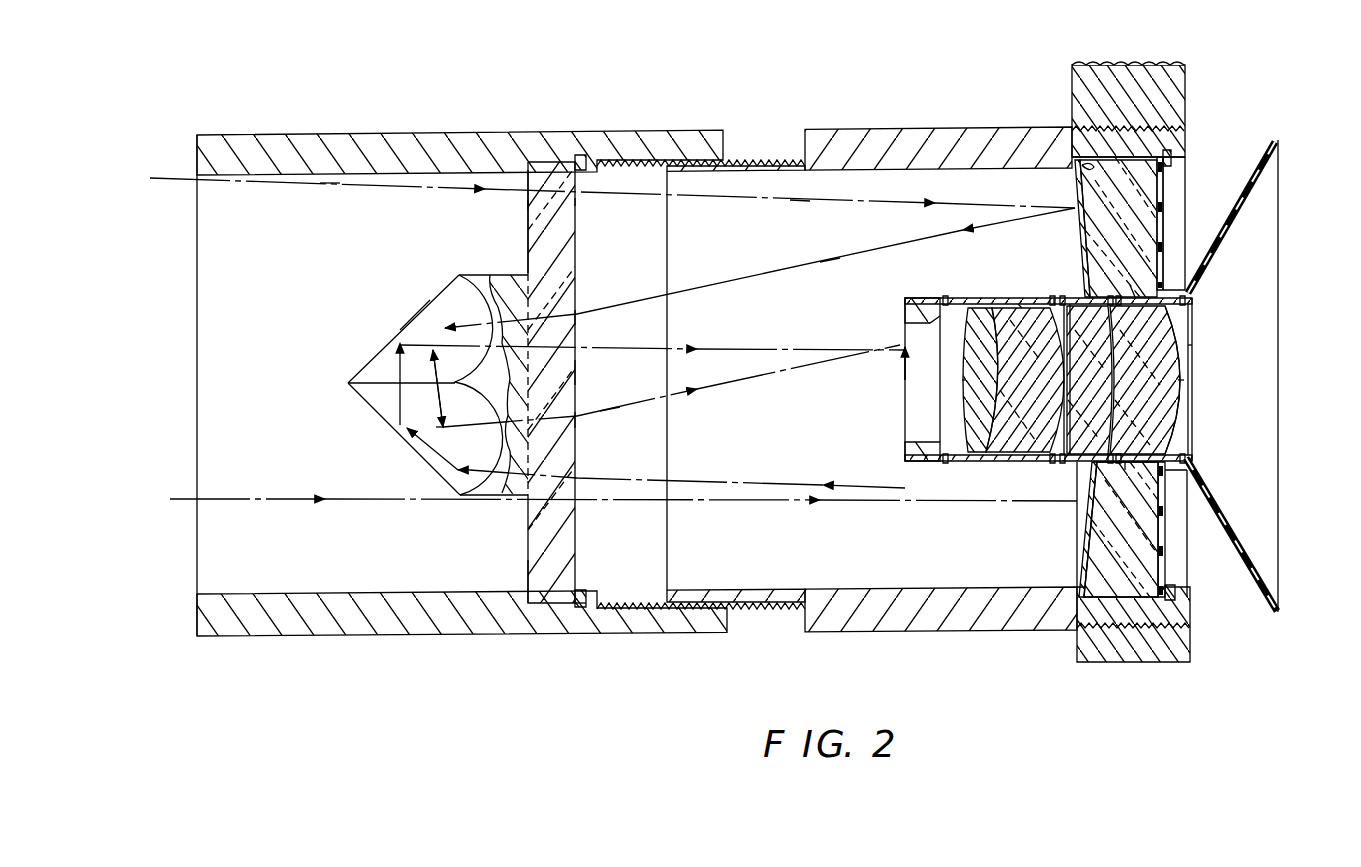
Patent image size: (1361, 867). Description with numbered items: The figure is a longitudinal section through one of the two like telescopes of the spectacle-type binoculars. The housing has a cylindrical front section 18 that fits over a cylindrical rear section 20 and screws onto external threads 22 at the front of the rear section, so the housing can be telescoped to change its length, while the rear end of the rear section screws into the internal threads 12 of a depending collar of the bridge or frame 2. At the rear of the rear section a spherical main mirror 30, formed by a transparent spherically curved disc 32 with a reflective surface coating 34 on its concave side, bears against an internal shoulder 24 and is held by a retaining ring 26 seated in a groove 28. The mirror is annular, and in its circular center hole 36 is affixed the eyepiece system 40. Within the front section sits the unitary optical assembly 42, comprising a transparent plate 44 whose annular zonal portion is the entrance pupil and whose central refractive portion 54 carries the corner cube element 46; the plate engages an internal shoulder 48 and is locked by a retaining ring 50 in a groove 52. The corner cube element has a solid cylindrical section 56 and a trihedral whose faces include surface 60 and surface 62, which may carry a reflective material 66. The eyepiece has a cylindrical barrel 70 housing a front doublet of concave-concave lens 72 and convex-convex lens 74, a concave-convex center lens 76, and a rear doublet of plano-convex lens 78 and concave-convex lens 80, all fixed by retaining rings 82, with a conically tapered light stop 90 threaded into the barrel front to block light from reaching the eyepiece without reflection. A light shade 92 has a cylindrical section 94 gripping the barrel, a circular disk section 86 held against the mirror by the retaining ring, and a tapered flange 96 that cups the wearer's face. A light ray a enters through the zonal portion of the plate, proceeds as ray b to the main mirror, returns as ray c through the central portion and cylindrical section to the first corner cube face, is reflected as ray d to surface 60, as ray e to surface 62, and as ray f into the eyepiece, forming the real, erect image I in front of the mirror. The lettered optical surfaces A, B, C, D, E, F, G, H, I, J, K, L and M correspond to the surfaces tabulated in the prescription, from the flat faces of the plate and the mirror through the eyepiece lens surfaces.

The bridge or frame 2 is at (1185, 82).
The internal threads 12 is at (1150, 133).
The cylindrical front section 18 is at (378, 134).
The cylindrical rear section 20 is at (915, 129).
The external threads 22 is at (752, 160).
The internal shoulder 24 is at (1077, 168).
The retaining ring 26 is at (1166, 166).
The groove 28 is at (1171, 156).
The spherical main mirror 30 is at (1097, 598).
The transparent spherically curved disc 32 is at (1102, 548).
The reflective surface coating 34 is at (1086, 525).
The circular center hole 36 is at (1070, 298).
The ocular or eyepiece system 40 is at (982, 297).
The unitary optical assembly 42 is at (578, 215).
The transparent plate 44 is at (540, 218).
The corner cube element 46 is at (430, 303).
The internal shoulder 48 is at (535, 592).
The retaining ring 50 is at (583, 590).
The groove 52 is at (576, 608).
The central refractive portion 54 is at (575, 373).
The solid cylindrical section 56 is at (505, 272).
The corner cube surface 60 is at (372, 372).
The corner cube surface 62 is at (373, 393).
The reflective material 66 is at (428, 310).
The cylindrical barrel 70 is at (1000, 458).
The concave-concave lens 72 is at (980, 455).
The convex-convex lens 74 is at (1042, 458).
The concave-convex center lens 76 is at (1155, 400).
The plano-convex lens 78 is at (1160, 355).
The concave-convex lens 80 is at (1195, 330).
The retaining rings 82 is at (945, 297).
The circular disk section 86 is at (1160, 567).
The conically-tapered light stop 90 is at (905, 308).
The light shade 92 is at (1283, 368).
The cylindrical section 94 is at (1178, 288).
The tapered flange 96 is at (1242, 535).
The optical surface A is at (528, 205).
The optical surface B is at (576, 202).
The optical surface C is at (1059, 181).
The optical surface D is at (575, 316).
The optical surface E is at (575, 418).
The optical surface F is at (963, 380).
The optical surface G is at (1022, 307).
The optical surface H is at (1055, 300).
The optical surface I is at (900, 368).
The optical surface J is at (1128, 470).
The optical surface K is at (1133, 297).
The optical surface L is at (1180, 380).
The optical surface M is at (1190, 345).
The light ray a is at (331, 183).
The light ray b is at (798, 202).
The light ray c is at (830, 262).
The light ray d is at (445, 329).
The light ray e is at (437, 427).
The light ray f is at (614, 411).